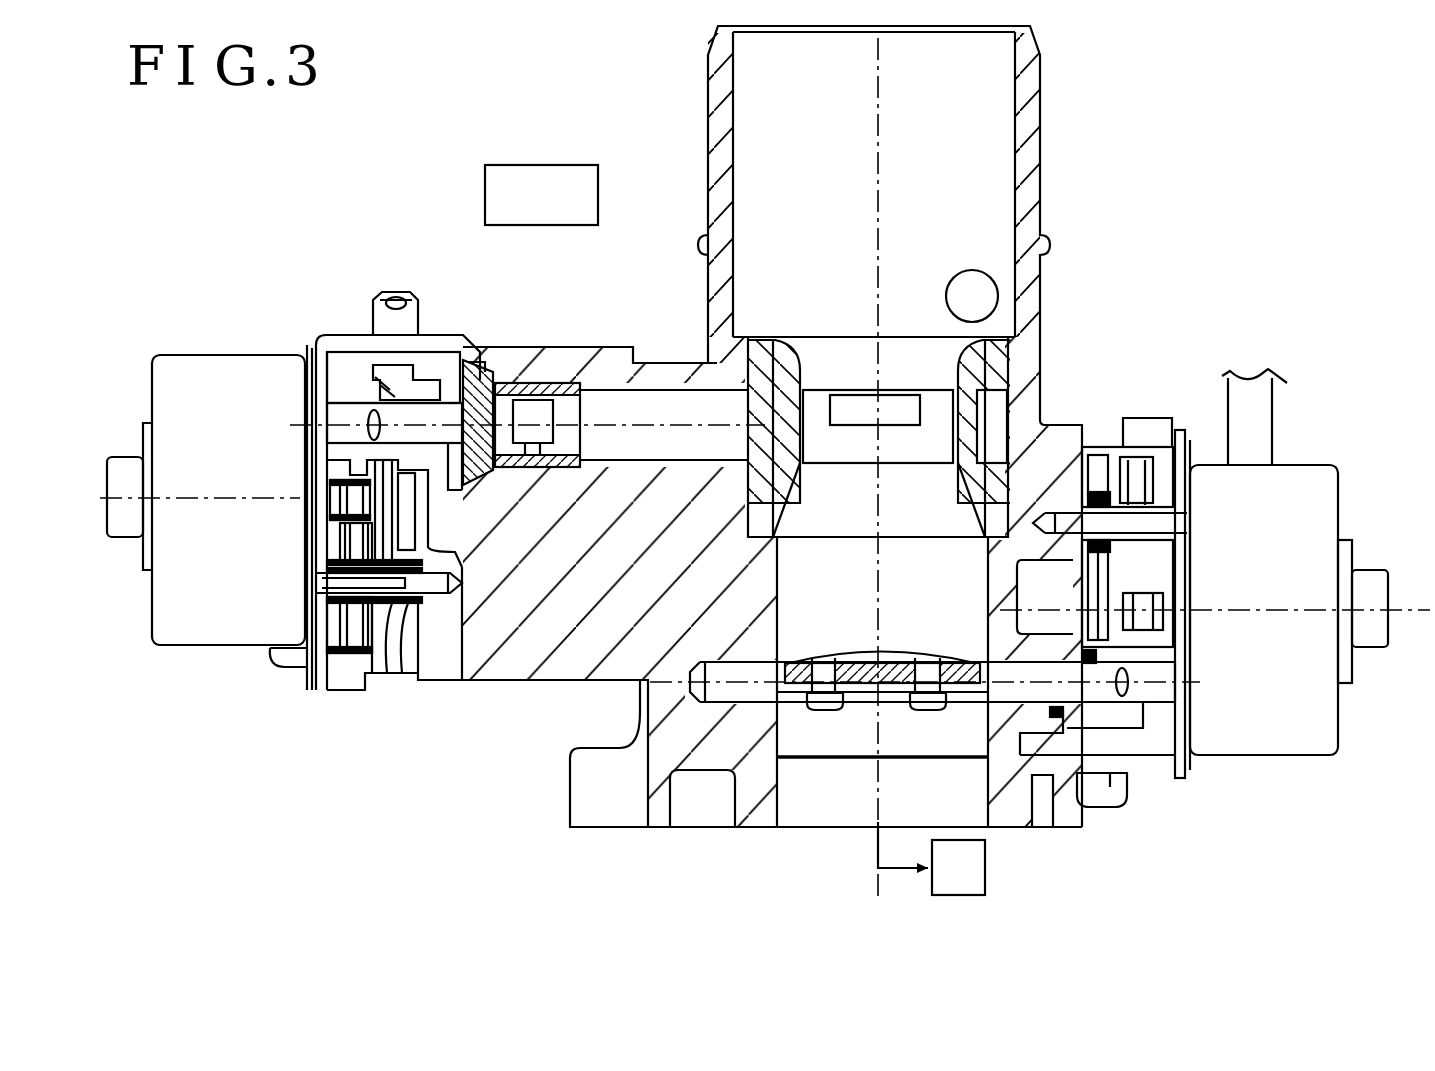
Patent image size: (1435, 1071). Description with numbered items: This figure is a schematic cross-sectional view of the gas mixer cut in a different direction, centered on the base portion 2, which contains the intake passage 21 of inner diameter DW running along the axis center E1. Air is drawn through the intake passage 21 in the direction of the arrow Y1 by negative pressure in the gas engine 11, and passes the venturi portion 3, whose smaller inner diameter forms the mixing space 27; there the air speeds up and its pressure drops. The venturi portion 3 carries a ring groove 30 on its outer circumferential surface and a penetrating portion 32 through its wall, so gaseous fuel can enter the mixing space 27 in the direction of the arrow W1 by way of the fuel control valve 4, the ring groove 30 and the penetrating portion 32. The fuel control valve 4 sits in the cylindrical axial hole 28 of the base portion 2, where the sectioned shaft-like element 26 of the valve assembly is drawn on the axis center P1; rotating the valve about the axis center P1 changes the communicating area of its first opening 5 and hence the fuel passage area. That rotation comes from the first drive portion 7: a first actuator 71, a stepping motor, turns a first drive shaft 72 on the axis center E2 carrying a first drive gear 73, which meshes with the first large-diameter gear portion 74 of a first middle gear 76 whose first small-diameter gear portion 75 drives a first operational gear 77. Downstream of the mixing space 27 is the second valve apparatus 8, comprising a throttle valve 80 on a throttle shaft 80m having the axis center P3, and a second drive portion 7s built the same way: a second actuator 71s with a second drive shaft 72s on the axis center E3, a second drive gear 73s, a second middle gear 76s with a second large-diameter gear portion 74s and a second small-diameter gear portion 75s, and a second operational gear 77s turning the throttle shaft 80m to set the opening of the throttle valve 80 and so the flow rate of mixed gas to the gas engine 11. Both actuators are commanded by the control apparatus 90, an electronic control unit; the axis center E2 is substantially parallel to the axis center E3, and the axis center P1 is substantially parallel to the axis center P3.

The base portion 2 is at (478, 340).
The venturi portion 3 is at (778, 342).
The fuel control valve 4 is at (372, 425).
The first opening 5 is at (534, 462).
The first drive portion 7 is at (300, 511).
The second drive portion 7s is at (1209, 561).
The second valve apparatus 8 is at (882, 642).
The gas engine 11 is at (988, 872).
The intake passage 21 is at (980, 110).
The throttle shaft 26 is at (737, 465).
The mixing space 27 is at (918, 352).
The axial hole 28 is at (566, 380).
The ring groove 30 is at (859, 428).
The penetrating portion 32 is at (912, 420).
The first actuator 71 is at (237, 372).
The first drive shaft 72 is at (326, 497).
The first drive gear 73 is at (310, 390).
The first large-diameter gear portion 74 is at (340, 522).
The first small-diameter gear portion 75 is at (389, 667).
The first middle gear 76 is at (340, 553).
The first operational gear 77 is at (395, 612).
The second actuator 71s is at (1285, 490).
The second drive shaft 72s is at (1168, 600).
The second drive gear 73s is at (1190, 735).
The second large-diameter gear portion 74s is at (1140, 462).
The second small-diameter gear portion 75s is at (1090, 455).
The second middle gear 76s is at (1152, 512).
The second operational gear 77s is at (1102, 545).
The throttle valve 80 is at (896, 657).
The throttle shaft 80m is at (1100, 690).
The control apparatus 90 is at (600, 205).
The inner diameter of the intake passage DW is at (1015, 85).
The axis center of the intake passage E1 is at (880, 240).
The axis center of the first drive shaft E2 is at (196, 497).
The axis center of the second drive shaft E3 is at (1300, 615).
The axis center of the fuel control valve P1 is at (612, 432).
The axis center of the throttle shaft P3 is at (773, 705).
The fuel flow direction arrow W1 is at (706, 415).
The air flow direction arrow Y1 is at (900, 155).